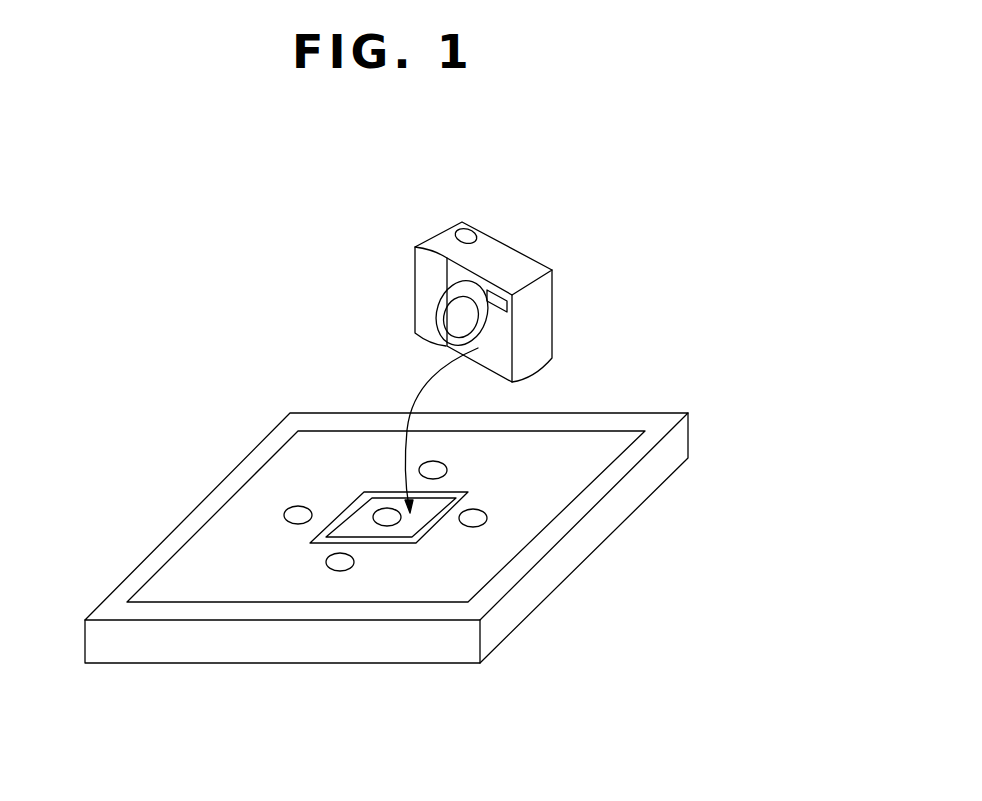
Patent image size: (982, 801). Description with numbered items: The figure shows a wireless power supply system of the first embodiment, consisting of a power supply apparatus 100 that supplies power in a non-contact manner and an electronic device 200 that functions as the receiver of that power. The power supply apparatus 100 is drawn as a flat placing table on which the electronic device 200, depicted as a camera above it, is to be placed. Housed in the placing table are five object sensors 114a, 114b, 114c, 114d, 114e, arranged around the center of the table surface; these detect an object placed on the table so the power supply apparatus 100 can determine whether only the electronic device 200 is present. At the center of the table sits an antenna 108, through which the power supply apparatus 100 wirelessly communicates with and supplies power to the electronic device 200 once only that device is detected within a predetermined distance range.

The power supply apparatus 100 is at (663, 417).
The antenna 108 is at (363, 489).
The object sensor 114a is at (383, 527).
The object sensor 114b is at (446, 466).
The object sensor 114c is at (487, 515).
The object sensor 114d is at (333, 571).
The object sensor 114e is at (283, 510).
The electronic device 200 is at (512, 242).